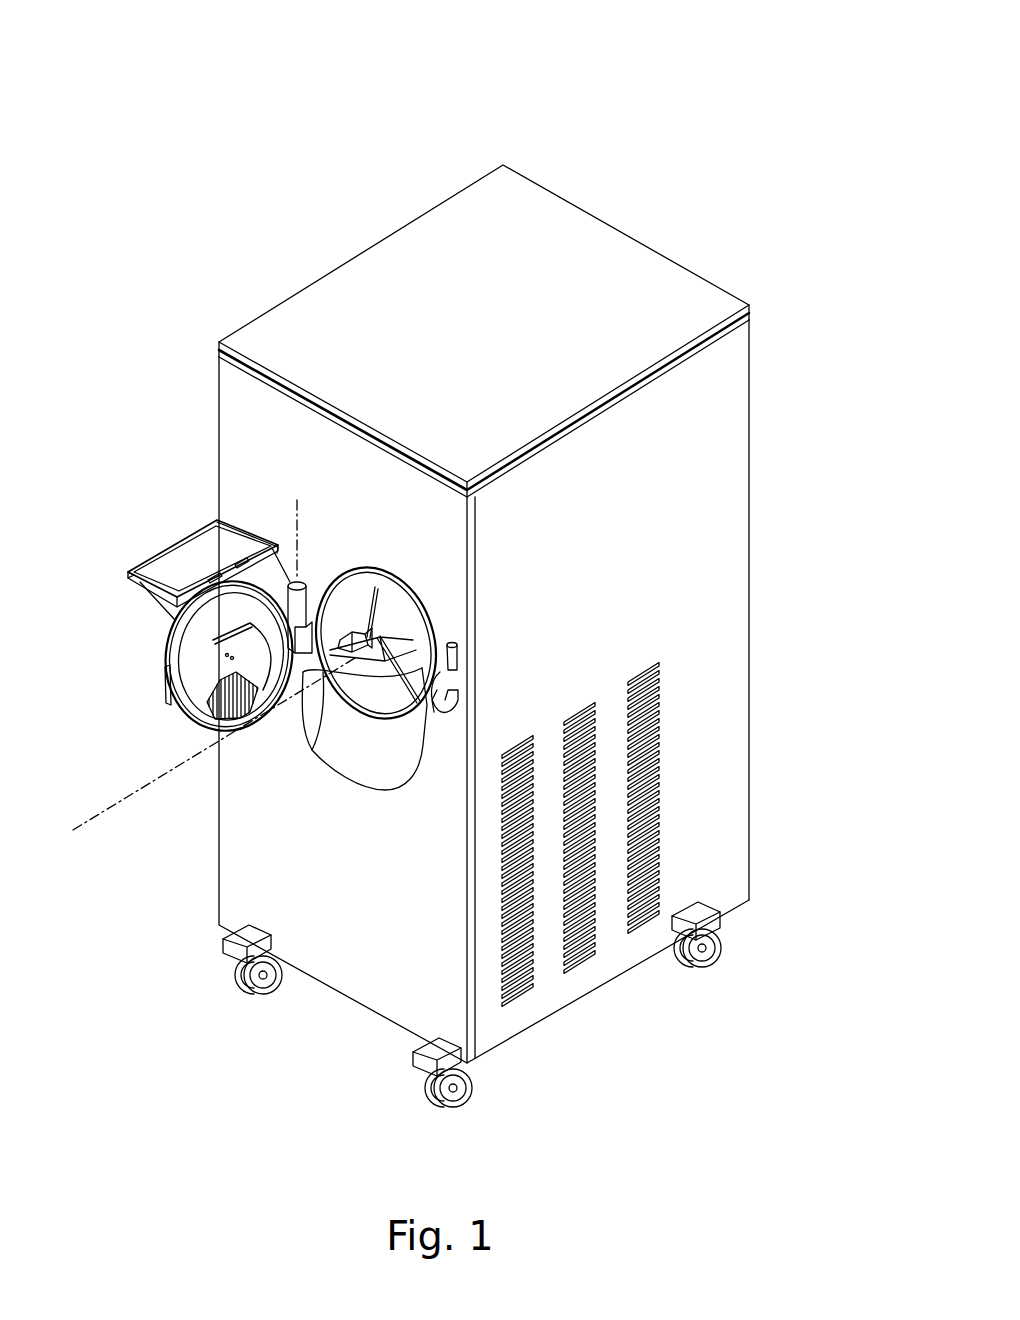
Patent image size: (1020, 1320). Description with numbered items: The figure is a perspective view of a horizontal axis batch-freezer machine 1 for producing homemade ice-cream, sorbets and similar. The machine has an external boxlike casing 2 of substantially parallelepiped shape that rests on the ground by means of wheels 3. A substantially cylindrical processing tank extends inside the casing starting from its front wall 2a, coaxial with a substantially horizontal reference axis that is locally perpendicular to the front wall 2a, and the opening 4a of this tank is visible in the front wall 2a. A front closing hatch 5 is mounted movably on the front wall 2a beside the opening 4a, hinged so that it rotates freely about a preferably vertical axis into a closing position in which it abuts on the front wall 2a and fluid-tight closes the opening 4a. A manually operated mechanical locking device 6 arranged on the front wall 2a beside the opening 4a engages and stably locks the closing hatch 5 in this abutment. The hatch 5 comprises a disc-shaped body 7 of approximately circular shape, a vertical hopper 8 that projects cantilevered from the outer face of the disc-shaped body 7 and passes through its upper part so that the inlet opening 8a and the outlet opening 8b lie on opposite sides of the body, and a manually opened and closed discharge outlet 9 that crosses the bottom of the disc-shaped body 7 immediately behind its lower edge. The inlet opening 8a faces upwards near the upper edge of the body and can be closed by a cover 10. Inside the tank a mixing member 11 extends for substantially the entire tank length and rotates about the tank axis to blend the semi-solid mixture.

The batch-freezer machine 1 is at (297, 137).
The boxlike casing 2 is at (572, 225).
The front wall 2a is at (365, 908).
The wheels 3 is at (222, 982).
The opening of the processing tank 4a is at (372, 685).
The front closing hatch 5 is at (165, 705).
The mechanical locking device 6 is at (434, 714).
The disc-shaped body 7 is at (173, 650).
The vertical hopper 8 is at (173, 605).
The inlet opening of the hopper 8a is at (183, 555).
The outlet opening of the hopper 8b is at (265, 543).
The discharge outlet 9 is at (237, 712).
The cover 10 is at (150, 572).
The mixing member 11 is at (357, 605).